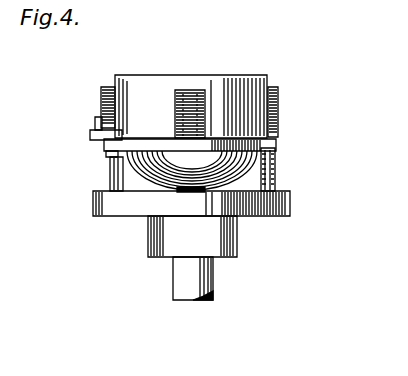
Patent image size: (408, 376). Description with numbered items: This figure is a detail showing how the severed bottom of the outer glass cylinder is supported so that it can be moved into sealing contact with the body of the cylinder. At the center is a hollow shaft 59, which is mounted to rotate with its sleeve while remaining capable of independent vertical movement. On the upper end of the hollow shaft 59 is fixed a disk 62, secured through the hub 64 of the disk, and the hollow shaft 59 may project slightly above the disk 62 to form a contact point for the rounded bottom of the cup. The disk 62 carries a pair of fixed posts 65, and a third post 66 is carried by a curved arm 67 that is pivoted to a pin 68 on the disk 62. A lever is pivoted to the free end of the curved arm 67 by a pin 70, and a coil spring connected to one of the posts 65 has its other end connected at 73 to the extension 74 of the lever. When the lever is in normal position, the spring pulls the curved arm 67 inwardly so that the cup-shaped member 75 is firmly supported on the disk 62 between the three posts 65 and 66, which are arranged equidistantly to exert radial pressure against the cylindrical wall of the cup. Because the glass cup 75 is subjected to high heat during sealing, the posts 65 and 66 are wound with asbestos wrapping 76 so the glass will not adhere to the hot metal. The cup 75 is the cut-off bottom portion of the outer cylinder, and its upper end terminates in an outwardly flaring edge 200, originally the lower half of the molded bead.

The cup-shaped member 75 is at (145, 95).
The asbestos wrapping 76 is at (173, 91).
The third post 66 is at (212, 84).
The outwardly flaring edge 200 is at (268, 74).
The spring connection point 73 is at (95, 124).
The extension 74 is at (92, 136).
The curved arm 67 is at (155, 147).
The pin 68 is at (276, 144).
The pin 70 is at (110, 158).
The fixed posts 65 is at (113, 186).
The disk 62 is at (290, 201).
The hub 64 is at (150, 238).
The hollow shaft 59 is at (175, 189).